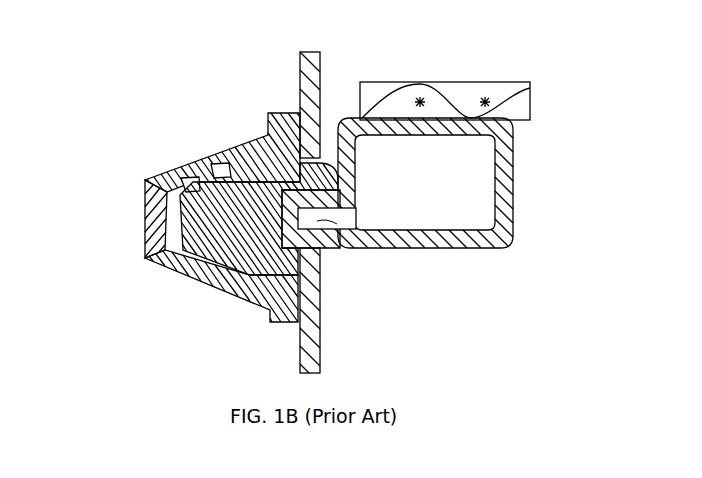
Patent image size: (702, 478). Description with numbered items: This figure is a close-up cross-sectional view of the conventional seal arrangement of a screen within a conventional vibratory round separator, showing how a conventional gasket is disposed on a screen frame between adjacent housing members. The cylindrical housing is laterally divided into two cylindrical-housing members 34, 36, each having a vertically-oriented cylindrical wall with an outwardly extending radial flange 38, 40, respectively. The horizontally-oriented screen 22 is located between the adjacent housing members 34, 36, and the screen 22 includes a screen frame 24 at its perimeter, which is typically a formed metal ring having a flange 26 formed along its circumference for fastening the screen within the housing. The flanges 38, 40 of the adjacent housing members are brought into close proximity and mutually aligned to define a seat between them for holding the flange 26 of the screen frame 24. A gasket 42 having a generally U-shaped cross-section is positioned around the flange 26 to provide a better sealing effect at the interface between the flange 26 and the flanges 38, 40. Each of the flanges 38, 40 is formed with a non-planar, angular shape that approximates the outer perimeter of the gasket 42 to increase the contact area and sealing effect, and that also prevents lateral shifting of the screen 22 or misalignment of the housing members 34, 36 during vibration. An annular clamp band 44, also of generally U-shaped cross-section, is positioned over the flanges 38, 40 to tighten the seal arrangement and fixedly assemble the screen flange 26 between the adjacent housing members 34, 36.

The screen 22 is at (482, 82).
The screen frame 24 is at (513, 168).
The flange 26 is at (352, 250).
The cylindrical-housing member 34 is at (320, 70).
The cylindrical-housing member 36 is at (322, 336).
The radial flange 38 is at (213, 172).
The radial flange 40 is at (205, 270).
The gasket 42 is at (160, 174).
The annular clamp band 44 is at (140, 215).